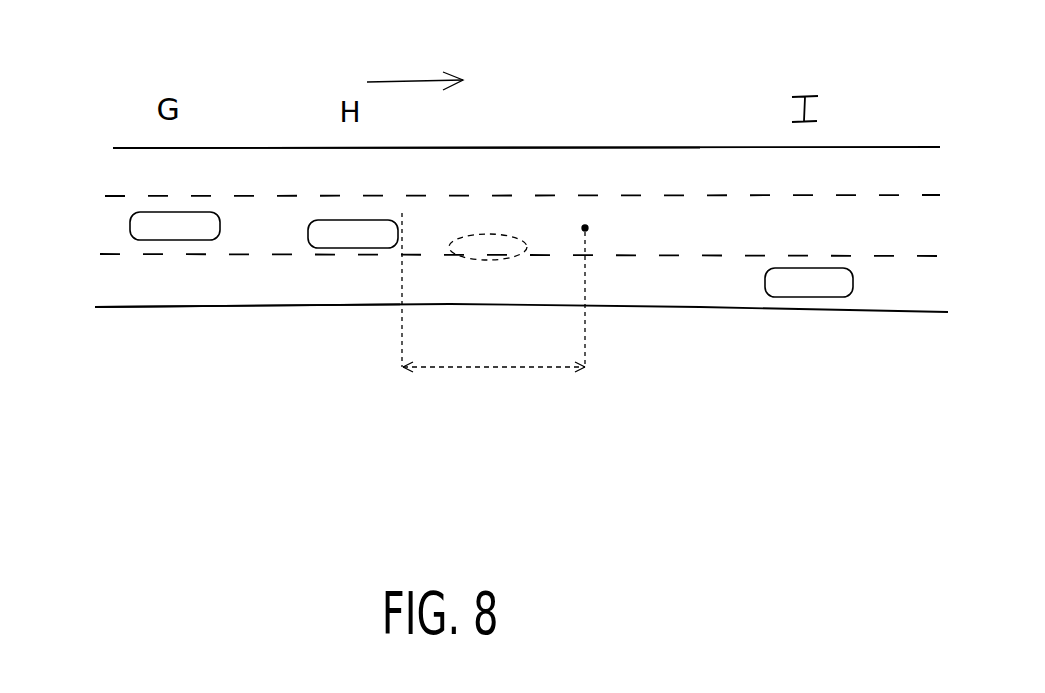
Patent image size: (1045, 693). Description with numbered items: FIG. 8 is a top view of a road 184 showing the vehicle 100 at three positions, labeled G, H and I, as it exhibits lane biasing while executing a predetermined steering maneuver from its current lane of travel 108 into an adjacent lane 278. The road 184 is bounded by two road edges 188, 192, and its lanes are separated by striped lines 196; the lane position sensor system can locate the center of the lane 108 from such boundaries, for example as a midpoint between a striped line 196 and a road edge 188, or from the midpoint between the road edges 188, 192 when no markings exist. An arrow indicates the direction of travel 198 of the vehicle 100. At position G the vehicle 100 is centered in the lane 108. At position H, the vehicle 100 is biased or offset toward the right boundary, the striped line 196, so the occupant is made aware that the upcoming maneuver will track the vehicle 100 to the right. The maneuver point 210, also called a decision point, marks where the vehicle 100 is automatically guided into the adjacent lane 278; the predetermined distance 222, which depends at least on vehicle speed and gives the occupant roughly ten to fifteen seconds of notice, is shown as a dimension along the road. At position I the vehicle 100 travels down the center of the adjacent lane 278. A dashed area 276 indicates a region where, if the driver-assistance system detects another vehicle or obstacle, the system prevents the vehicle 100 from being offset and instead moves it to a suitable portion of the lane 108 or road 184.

The vehicle 100 is at (170, 217).
The current lane of travel 108 is at (105, 228).
The road 184 is at (903, 178).
The road edge 188 is at (698, 307).
The road edge 192 is at (563, 147).
The striped line 196 is at (498, 193).
The direction of travel 198 is at (407, 80).
The maneuver point 210 is at (588, 227).
The predetermined distance 222 is at (497, 372).
The area 276 is at (456, 275).
The adjacent lane 278 is at (242, 287).